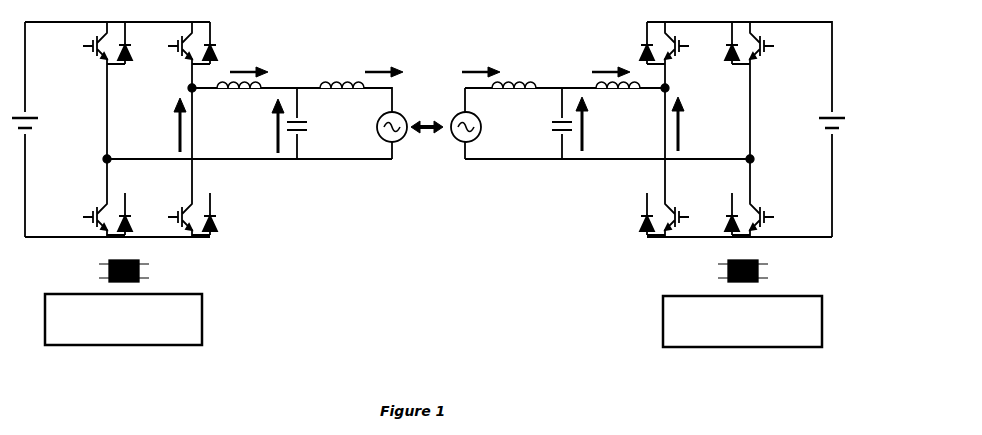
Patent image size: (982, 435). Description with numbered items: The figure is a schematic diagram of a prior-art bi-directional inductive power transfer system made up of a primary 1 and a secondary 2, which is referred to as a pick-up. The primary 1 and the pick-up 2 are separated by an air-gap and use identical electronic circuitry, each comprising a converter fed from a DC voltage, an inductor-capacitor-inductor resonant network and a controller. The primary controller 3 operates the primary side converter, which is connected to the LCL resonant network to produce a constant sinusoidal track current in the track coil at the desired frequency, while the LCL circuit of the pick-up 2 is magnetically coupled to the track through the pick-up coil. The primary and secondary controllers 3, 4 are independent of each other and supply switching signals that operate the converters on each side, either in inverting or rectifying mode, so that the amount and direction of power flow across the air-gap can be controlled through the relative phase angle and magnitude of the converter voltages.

The primary 1 is at (227, 129).
The secondary 2 is at (666, 129).
The primary controller 3 is at (175, 336).
The secondary controller 4 is at (686, 341).